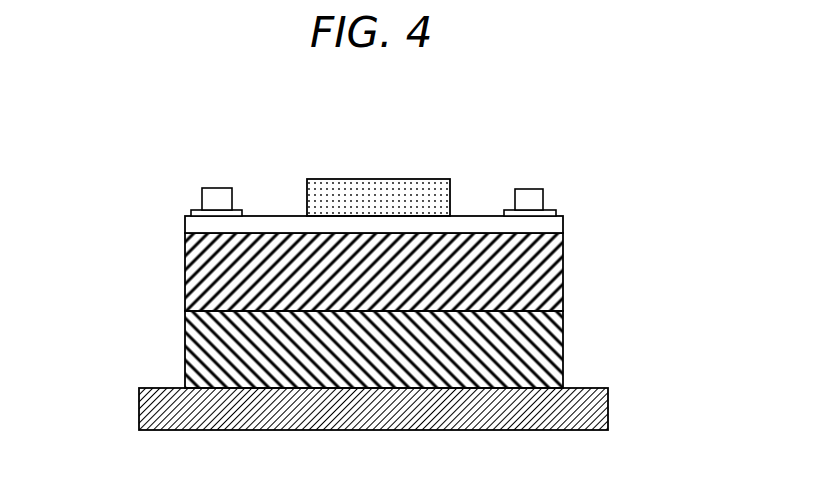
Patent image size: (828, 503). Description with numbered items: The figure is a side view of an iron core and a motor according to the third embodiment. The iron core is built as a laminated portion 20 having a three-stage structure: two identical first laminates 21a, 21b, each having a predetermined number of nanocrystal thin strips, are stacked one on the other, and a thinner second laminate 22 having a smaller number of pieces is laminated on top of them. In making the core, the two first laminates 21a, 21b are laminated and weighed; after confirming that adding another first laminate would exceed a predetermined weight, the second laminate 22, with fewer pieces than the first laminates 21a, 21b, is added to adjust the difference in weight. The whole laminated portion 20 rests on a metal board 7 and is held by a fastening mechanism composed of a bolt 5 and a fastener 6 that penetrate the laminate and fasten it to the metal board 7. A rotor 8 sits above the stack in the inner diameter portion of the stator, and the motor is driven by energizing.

The bolt 5 is at (545, 190).
The fastener 6 is at (557, 212).
The metal board 7 is at (547, 417).
The rotor 8 is at (370, 203).
The laminated portion 20 is at (353, 289).
The first laminate 21a is at (212, 280).
The first laminate 21b is at (205, 355).
The second laminate 22 is at (212, 227).